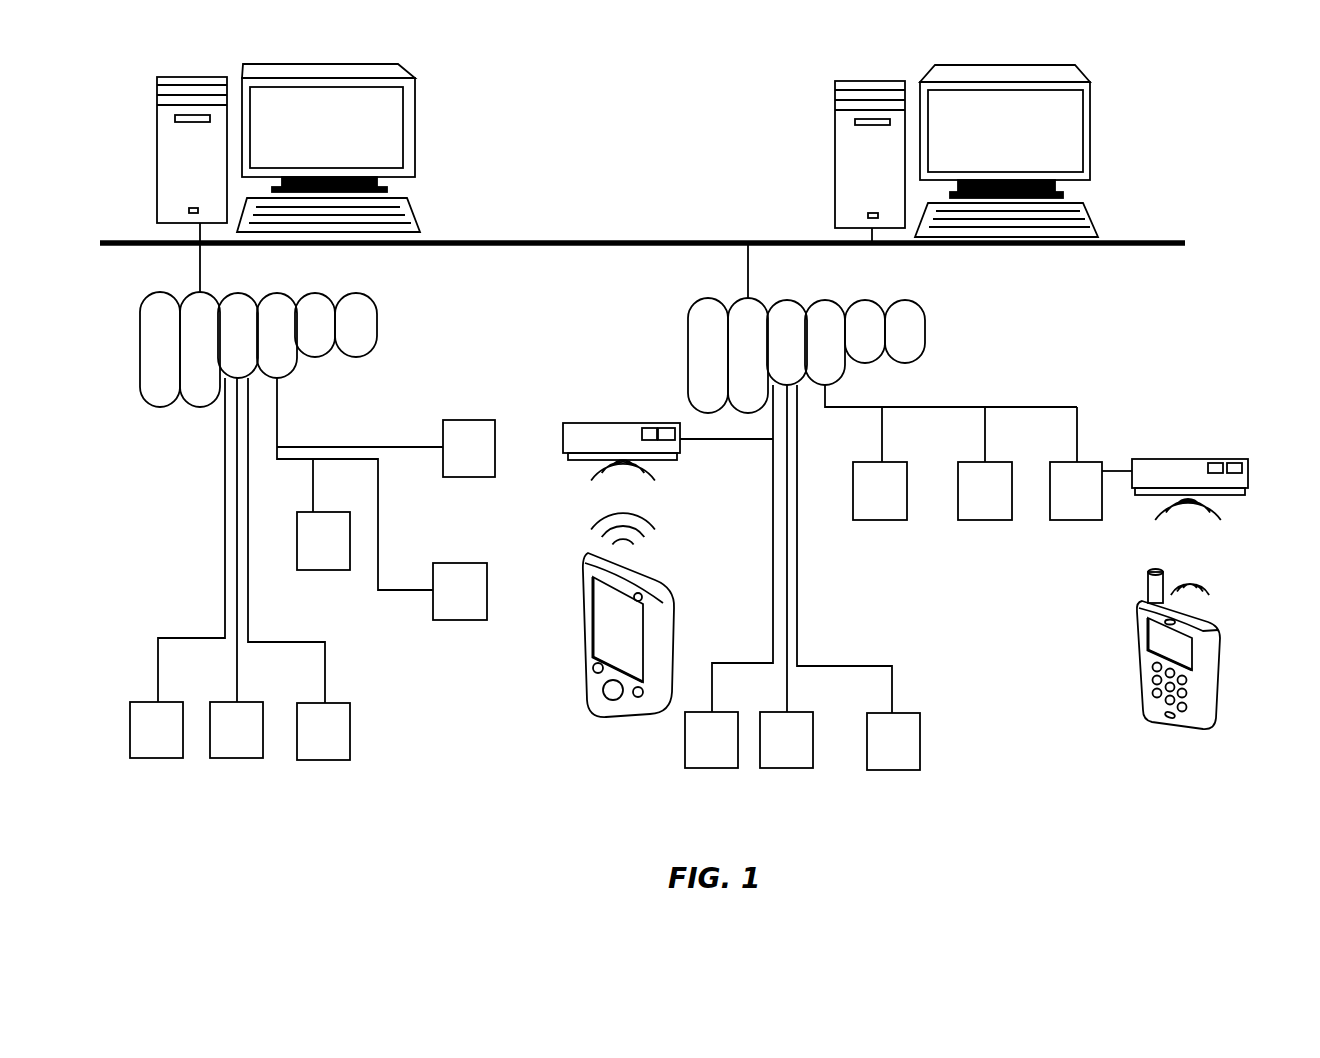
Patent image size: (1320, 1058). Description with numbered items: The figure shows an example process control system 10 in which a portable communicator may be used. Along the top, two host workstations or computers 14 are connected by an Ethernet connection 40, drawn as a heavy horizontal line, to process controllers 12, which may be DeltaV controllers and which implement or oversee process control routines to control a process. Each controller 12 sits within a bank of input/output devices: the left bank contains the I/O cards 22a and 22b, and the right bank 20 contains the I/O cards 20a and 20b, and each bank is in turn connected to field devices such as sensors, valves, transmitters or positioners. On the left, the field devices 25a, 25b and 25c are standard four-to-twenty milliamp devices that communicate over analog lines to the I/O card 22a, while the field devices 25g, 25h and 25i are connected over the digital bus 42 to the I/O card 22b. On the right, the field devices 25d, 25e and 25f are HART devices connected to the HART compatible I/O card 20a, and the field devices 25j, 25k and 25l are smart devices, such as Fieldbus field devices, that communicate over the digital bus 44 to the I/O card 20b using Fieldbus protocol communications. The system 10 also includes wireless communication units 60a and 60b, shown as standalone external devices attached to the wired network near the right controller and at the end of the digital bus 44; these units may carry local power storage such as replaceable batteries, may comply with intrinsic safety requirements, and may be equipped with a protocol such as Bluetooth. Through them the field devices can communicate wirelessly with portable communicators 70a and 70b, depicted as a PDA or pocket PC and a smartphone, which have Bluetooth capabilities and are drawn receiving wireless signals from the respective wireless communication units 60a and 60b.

The process control system 10 is at (648, 115).
The process controller 12 is at (208, 295).
The host workstation or computer 14 is at (180, 75).
The bank of input/output devices 20 is at (946, 328).
The HART compatible I/O card 20a is at (818, 283).
The I/O card 20b is at (833, 300).
The I/O card 22a is at (270, 279).
The I/O card 22b is at (287, 295).
The field device 25a is at (165, 702).
The field device 25b is at (248, 702).
The field device 25c is at (350, 703).
The field device 25d is at (718, 712).
The field device 25e is at (812, 712).
The field device 25f is at (900, 713).
The field device 25g is at (472, 420).
The field device 25h is at (323, 512).
The field device 25i is at (483, 563).
The field device 25j is at (885, 460).
The field device 25k is at (993, 460).
The field device 25l is at (1082, 460).
The Ethernet connection 40 is at (475, 241).
The digital bus 42 is at (277, 420).
The digital bus 44 is at (968, 407).
The wireless communication unit 60a is at (580, 423).
The wireless communication unit 60b is at (1163, 459).
The portable communicator 70a is at (665, 580).
The portable communicator 70b is at (1213, 620).